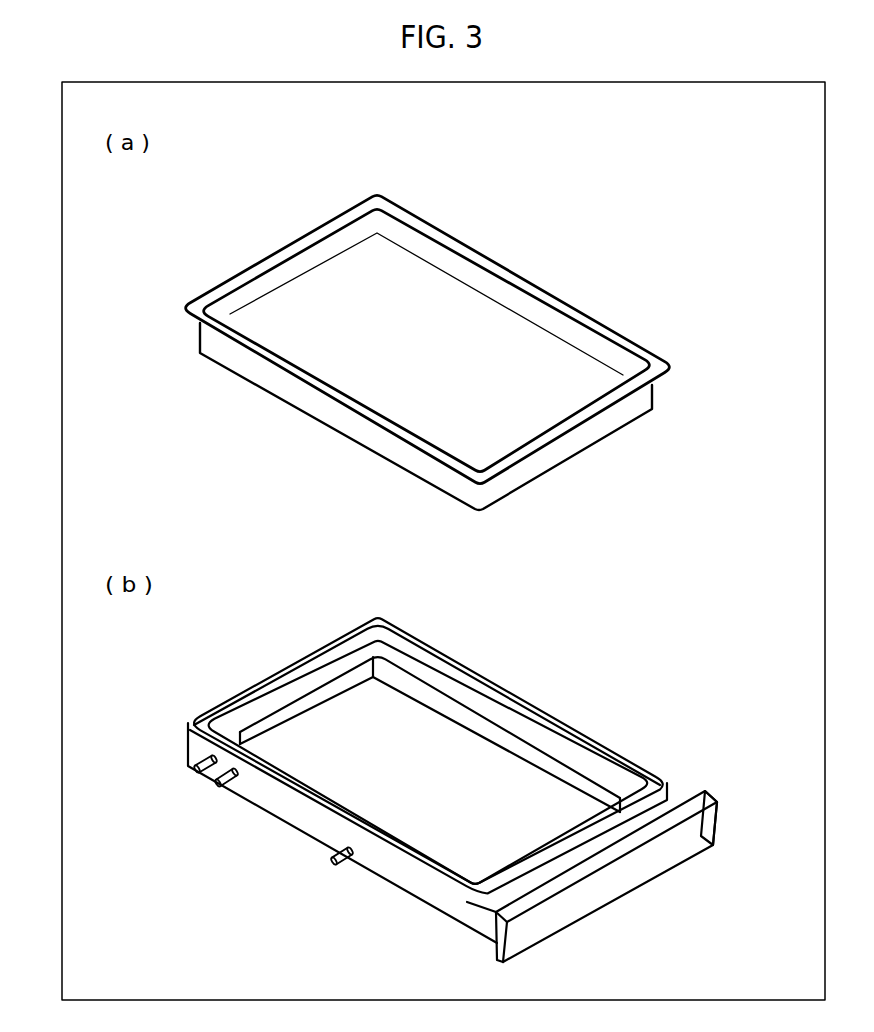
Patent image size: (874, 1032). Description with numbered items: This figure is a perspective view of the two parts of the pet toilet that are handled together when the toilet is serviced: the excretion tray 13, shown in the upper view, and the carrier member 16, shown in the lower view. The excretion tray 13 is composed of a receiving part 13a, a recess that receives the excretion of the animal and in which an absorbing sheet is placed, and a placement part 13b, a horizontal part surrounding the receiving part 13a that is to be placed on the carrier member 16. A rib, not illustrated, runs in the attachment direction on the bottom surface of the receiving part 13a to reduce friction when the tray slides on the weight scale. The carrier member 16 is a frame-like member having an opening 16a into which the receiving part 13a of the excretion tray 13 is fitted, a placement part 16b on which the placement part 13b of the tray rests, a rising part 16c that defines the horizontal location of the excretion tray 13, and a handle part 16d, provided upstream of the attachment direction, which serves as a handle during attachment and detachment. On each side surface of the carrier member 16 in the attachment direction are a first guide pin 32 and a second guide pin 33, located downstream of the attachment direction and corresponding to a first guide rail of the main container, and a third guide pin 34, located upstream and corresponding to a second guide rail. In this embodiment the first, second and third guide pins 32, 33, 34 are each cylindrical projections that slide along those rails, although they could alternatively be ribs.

The excretion tray 13 is at (438, 330).
The receiving part 13a is at (430, 292).
The placement part 13b is at (592, 315).
The carrier member 16 is at (407, 763).
The opening 16a is at (505, 737).
The placement part 16b is at (333, 672).
The rising part 16c is at (267, 680).
The handle part 16d is at (622, 880).
The first guide pin 32 is at (196, 772).
The second guide pin 33 is at (218, 784).
The third guide pin 34 is at (325, 835).